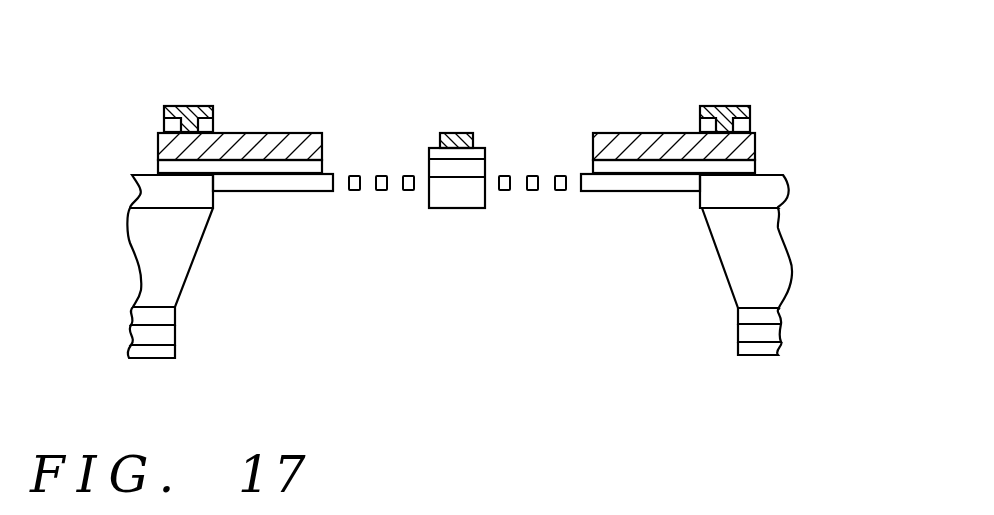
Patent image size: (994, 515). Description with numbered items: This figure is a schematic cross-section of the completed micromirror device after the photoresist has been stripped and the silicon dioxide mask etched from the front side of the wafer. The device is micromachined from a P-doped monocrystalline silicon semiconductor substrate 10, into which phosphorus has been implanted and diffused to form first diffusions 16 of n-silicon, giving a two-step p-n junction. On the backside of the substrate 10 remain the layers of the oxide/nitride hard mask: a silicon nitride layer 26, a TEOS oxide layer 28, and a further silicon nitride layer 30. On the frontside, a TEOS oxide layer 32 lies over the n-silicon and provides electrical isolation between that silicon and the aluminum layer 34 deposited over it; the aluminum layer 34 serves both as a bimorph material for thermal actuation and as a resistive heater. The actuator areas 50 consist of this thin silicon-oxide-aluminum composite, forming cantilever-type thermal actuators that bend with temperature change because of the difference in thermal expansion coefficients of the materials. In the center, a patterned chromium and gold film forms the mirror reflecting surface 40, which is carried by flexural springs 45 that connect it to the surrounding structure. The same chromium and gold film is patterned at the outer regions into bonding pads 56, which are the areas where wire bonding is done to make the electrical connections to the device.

The semiconductor substrate 10 is at (753, 268).
The first diffusions 16 is at (148, 195).
The silicon nitride layer 26 is at (748, 318).
The TEOS oxide layer 28 is at (753, 335).
The silicon nitride layer 30 is at (768, 357).
The TEOS oxide layer 32 is at (748, 170).
The aluminum layer 34 is at (745, 143).
The mirror reflecting surface 40 is at (455, 133).
The flexural springs 45 is at (382, 190).
The actuator areas 50 is at (273, 188).
The bonding pads 56 is at (187, 112).